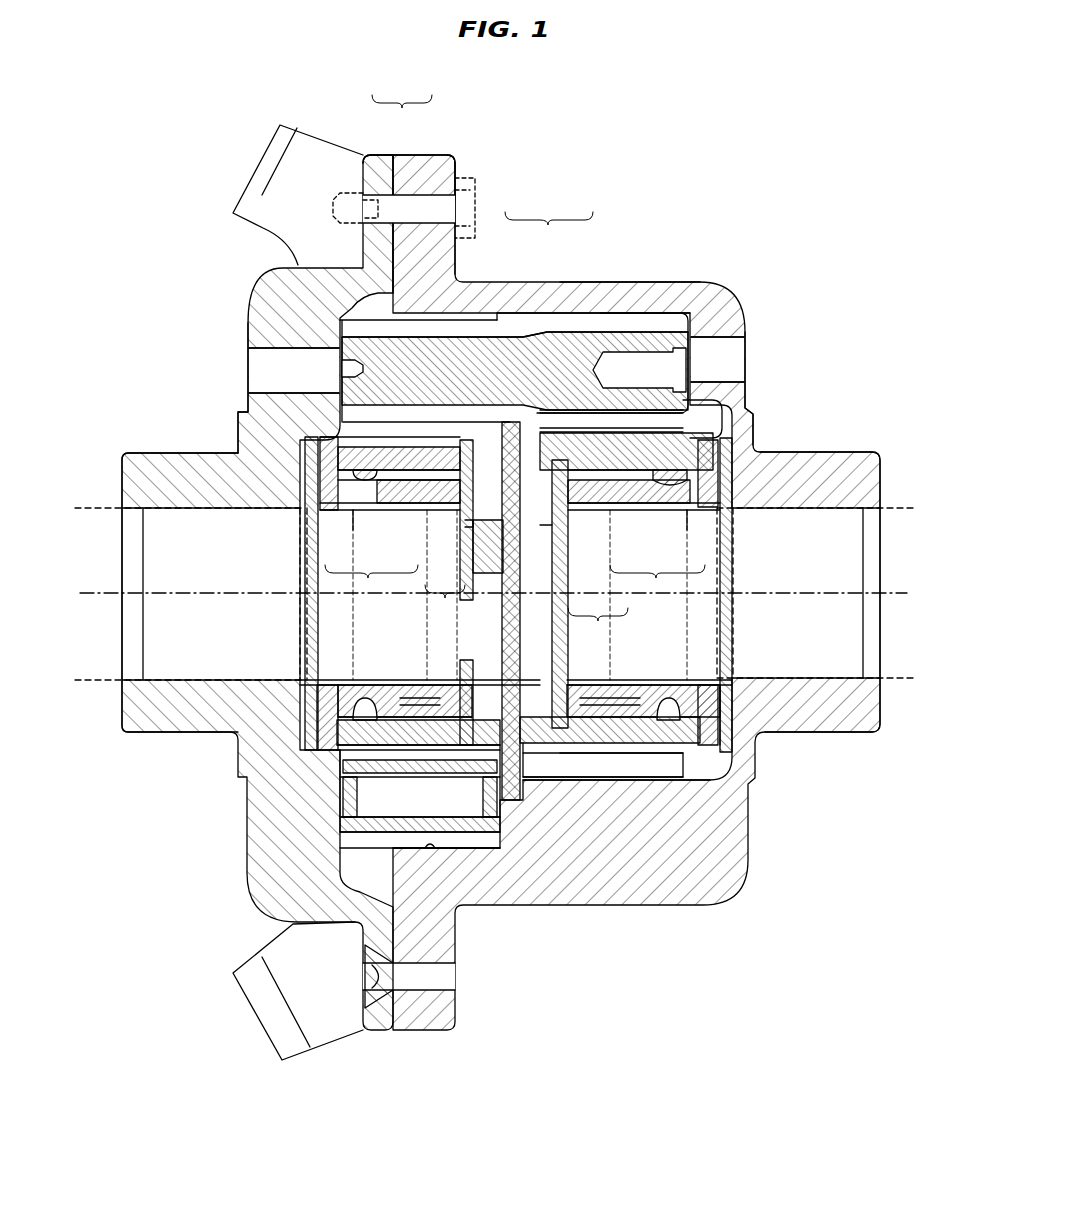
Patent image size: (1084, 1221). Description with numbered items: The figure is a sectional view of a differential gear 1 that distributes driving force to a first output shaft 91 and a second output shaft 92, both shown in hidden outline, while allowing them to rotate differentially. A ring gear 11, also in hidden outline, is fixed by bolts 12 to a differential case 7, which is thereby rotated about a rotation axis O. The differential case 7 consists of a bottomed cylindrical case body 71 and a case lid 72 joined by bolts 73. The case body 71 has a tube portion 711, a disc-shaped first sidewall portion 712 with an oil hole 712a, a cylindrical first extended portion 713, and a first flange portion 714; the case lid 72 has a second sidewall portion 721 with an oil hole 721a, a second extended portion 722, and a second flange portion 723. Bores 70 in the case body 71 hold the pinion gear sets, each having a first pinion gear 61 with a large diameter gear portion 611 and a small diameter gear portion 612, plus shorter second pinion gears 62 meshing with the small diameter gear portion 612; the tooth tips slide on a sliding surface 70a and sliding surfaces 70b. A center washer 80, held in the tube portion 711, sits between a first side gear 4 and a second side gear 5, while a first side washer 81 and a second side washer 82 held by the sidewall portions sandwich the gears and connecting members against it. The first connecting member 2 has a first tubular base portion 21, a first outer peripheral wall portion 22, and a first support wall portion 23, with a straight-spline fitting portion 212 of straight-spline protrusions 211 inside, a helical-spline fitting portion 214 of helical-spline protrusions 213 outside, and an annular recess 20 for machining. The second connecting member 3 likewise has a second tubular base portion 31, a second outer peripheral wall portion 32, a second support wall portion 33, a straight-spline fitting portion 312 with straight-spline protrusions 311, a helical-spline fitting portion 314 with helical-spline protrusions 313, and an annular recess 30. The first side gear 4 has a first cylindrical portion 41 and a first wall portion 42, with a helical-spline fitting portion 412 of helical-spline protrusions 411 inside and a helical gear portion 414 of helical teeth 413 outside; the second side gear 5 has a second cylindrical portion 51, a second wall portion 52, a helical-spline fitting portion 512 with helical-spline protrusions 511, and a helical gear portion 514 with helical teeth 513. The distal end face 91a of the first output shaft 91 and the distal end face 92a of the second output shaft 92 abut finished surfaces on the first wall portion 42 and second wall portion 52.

The differential gear 1 is at (860, 190).
The rotation axis O is at (895, 593).
The first connecting member 2 is at (649, 594).
The annular recess 20 is at (703, 760).
The first tubular base portion 21 is at (637, 498).
The first outer peripheral wall portion 22 is at (710, 458).
The first support wall portion 23 is at (691, 480).
The straight-spline protrusions 211 is at (718, 680).
The straight-spline fitting portion 212 is at (670, 670).
The helical-spline protrusions 213 is at (603, 707).
The helical-spline fitting portion 214 is at (625, 707).
The second connecting member 3 is at (420, 561).
The second tubular base portion 31 is at (400, 498).
The second outer peripheral wall portion 32 is at (328, 455).
The second support wall portion 33 is at (348, 476).
The annular recess 30 is at (362, 715).
The straight-spline protrusions 311 is at (357, 678).
The straight-spline fitting portion 312 is at (372, 670).
The helical-spline protrusions 313 is at (433, 713).
The helical-spline fitting portion 314 is at (417, 703).
The first side gear 4 is at (598, 626).
The first cylindrical portion 41 is at (590, 452).
The first wall portion 42 is at (563, 520).
The helical-spline protrusions 411 is at (690, 742).
The helical-spline fitting portion 412 is at (640, 747).
The helical teeth 413 is at (612, 728).
The helical gear portion 414 is at (568, 782).
The second side gear 5 is at (445, 606).
The second cylindrical portion 51 is at (445, 452).
The second wall portion 52 is at (487, 543).
The helical-spline protrusions 511 is at (442, 715).
The helical-spline fitting portion 512 is at (413, 722).
The helical teeth 513 is at (340, 846).
The helical gear portion 514 is at (337, 754).
The first pinion gear 61 is at (549, 206).
The large diameter gear portion 611 is at (558, 322).
The small diameter gear portion 612 is at (468, 326).
The second pinion gear 62 is at (473, 822).
The differential case 7 is at (402, 89).
The bore 70 is at (338, 318).
The sliding surface 70a is at (648, 320).
The sliding surfaces 70b is at (433, 845).
The case body 71 is at (408, 155).
The case lid 72 is at (374, 155).
The bolts 73 is at (447, 975).
The tube portion 711 is at (638, 294).
The first sidewall portion 712 is at (754, 432).
The oil hole 712a is at (740, 360).
The first extended portion 713 is at (843, 466).
The first flange portion 714 is at (445, 160).
The second sidewall portion 721 is at (287, 452).
The oil hole 721a is at (257, 371).
The second extended portion 722 is at (172, 462).
The second flange portion 723 is at (368, 157).
The center washer 80 is at (511, 784).
The first side washer 81 is at (732, 742).
The second side washer 82 is at (308, 727).
The first output shaft 91 is at (902, 506).
The distal end face 91a is at (542, 531).
The second output shaft 92 is at (94, 507).
The distal end face 92a is at (467, 527).
The ring gear 11 is at (258, 176).
The bolts 12 is at (474, 186).